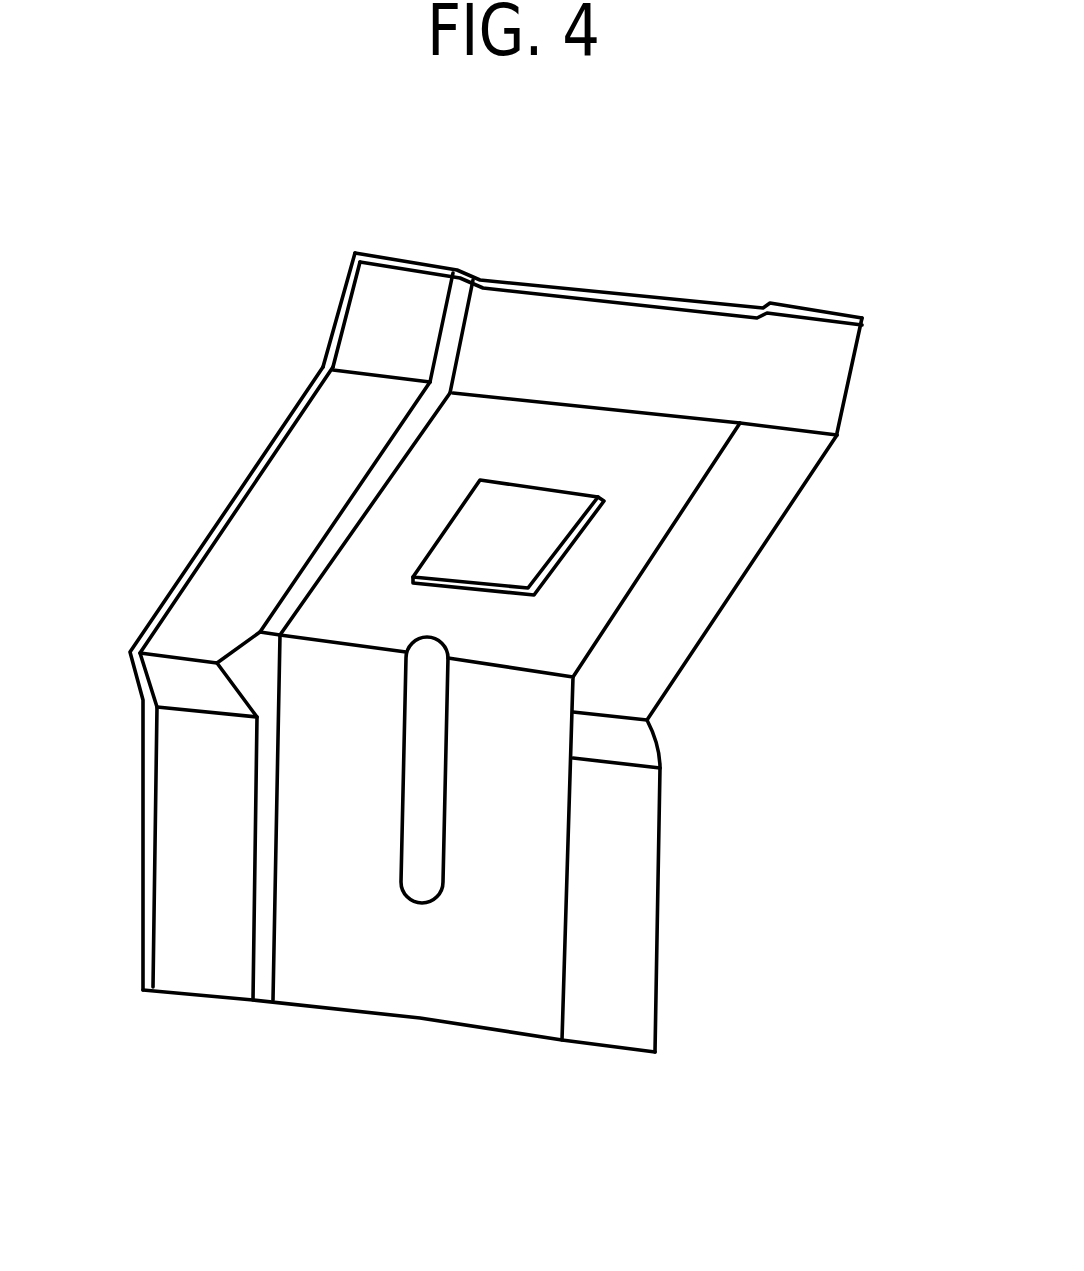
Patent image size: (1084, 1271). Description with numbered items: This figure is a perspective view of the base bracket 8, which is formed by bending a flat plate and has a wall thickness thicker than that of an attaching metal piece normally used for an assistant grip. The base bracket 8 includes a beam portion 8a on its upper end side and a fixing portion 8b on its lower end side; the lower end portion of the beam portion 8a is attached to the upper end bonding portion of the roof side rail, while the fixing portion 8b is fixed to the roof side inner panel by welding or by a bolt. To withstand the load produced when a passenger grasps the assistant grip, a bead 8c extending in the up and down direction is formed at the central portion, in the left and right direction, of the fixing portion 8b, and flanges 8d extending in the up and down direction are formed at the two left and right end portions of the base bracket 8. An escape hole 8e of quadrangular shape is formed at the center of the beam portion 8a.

The base bracket 8 is at (475, 621).
The beam portion 8a is at (620, 560).
The fixing portion 8b is at (420, 978).
The bead 8c is at (425, 827).
The flanges 8d is at (253, 537).
The escape hole 8e is at (530, 510).